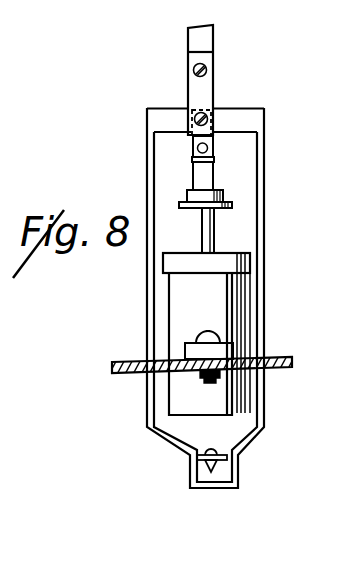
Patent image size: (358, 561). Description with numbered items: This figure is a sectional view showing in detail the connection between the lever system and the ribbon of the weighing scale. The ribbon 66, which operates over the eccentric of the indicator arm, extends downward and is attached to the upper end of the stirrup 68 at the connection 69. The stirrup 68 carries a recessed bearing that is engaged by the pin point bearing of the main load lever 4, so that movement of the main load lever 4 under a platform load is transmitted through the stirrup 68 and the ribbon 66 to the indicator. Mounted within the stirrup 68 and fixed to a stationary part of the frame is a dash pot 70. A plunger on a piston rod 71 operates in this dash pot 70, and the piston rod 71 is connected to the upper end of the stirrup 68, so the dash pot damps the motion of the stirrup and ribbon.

The ribbon 66 is at (206, 44).
The connection 69 is at (216, 108).
The piston rod 71 is at (251, 194).
The dash pot 70 is at (240, 320).
The stirrup 68 is at (265, 427).
The main load lever 4 is at (238, 475).